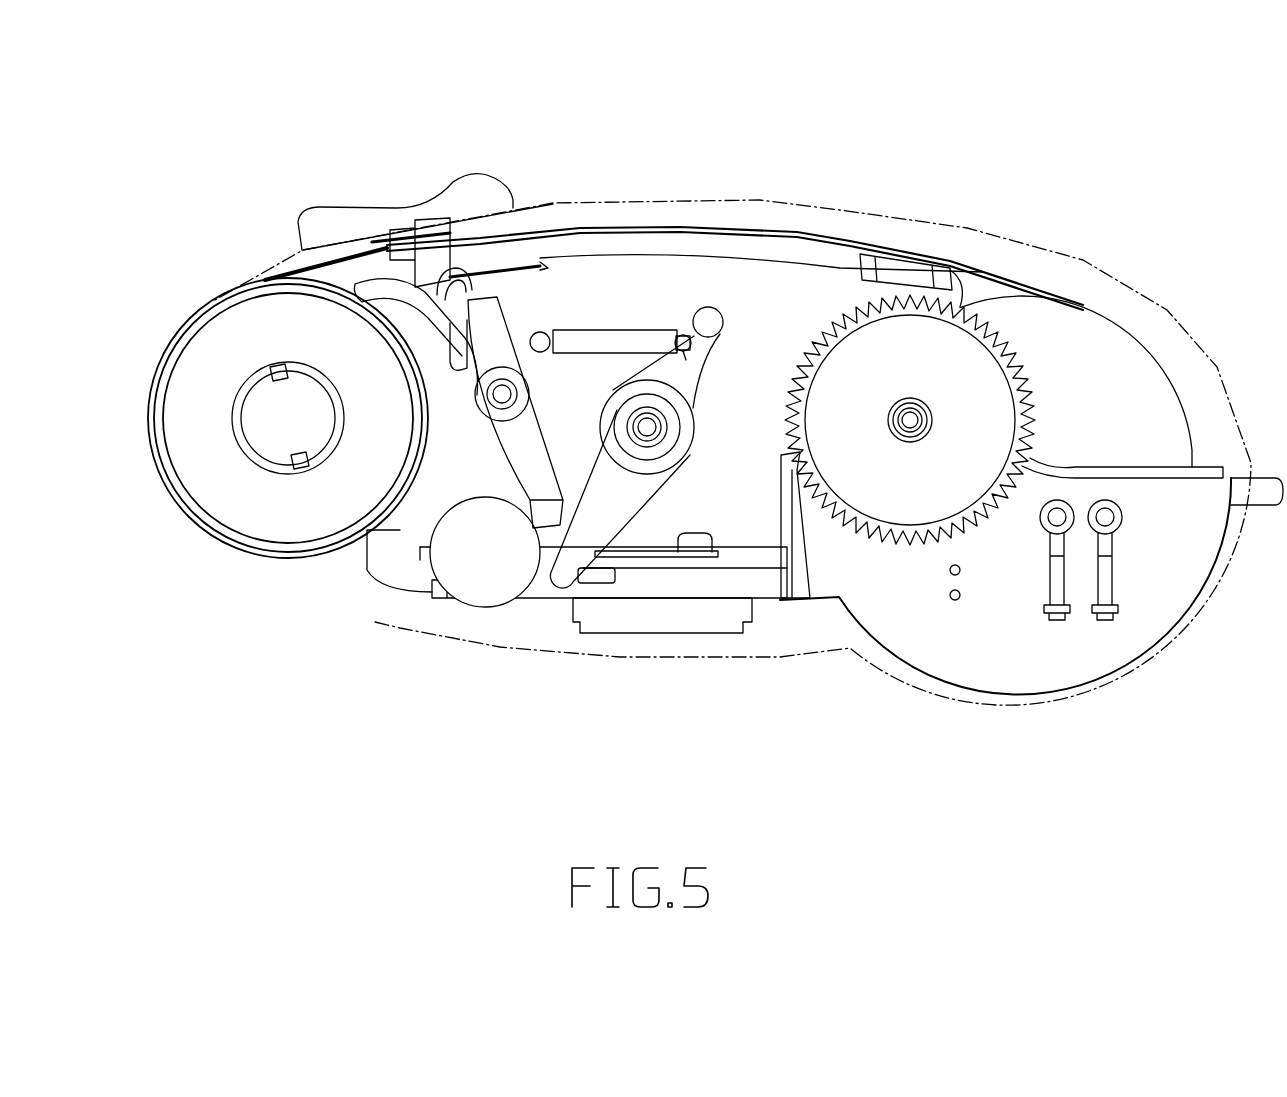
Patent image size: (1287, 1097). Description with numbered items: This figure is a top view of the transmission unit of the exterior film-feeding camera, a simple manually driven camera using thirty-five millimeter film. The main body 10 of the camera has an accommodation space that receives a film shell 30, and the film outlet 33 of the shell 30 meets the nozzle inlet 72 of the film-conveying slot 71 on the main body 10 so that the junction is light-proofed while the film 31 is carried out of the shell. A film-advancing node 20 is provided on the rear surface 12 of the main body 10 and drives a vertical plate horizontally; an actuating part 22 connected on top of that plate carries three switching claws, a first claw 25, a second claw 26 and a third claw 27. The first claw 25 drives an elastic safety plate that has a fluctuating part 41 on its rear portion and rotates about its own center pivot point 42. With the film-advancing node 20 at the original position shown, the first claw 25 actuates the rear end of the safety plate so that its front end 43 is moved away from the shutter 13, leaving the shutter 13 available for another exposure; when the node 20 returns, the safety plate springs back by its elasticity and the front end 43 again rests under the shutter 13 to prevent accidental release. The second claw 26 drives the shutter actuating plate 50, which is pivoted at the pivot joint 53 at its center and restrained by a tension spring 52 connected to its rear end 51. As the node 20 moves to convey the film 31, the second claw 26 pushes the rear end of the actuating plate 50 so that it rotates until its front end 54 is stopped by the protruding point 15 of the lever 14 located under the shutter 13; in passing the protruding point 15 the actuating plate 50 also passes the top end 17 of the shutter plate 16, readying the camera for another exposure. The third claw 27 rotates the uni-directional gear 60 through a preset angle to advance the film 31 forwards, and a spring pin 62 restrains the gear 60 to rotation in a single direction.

The main body 10 is at (1044, 730).
The rear surface 12 is at (865, 212).
The shutter 13 is at (485, 592).
The lever 14 is at (753, 598).
The protruding point 15 is at (610, 569).
The shutter plate 16 is at (747, 585).
The top end 17 is at (607, 500).
The film-advancing node 20 is at (487, 183).
The actuating part 22 is at (423, 313).
The first switching claw 25 is at (507, 257).
The second claw 26 is at (480, 302).
The third claw 27 is at (543, 262).
The film shell 30 is at (265, 558).
The film 31 is at (975, 295).
The film outlet 33 is at (357, 268).
The fluctuating part 41 is at (468, 340).
The center pivot point 42 is at (503, 394).
The front end 43 is at (540, 592).
The shutter actuating plate 50 is at (683, 557).
The rear end 51 is at (705, 360).
The tension spring 52 is at (607, 333).
The pivot joint 53 is at (650, 427).
The front end 54 is at (562, 586).
The uni-directional gear 60 is at (982, 404).
The spring pin 62 is at (790, 470).
The film-conveying slot 71 is at (760, 230).
The nozzle inlet 72 is at (383, 262).